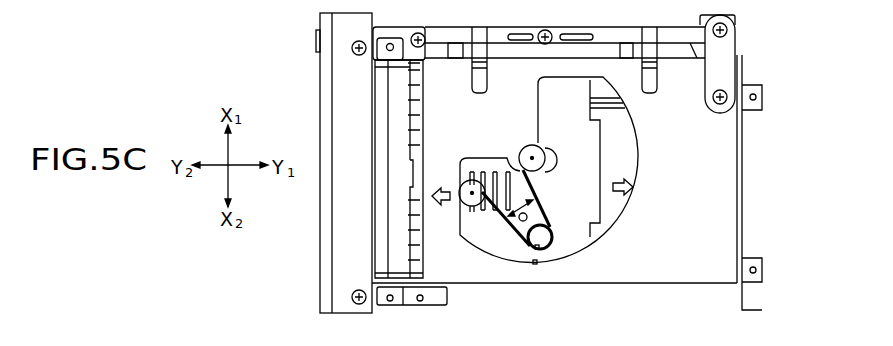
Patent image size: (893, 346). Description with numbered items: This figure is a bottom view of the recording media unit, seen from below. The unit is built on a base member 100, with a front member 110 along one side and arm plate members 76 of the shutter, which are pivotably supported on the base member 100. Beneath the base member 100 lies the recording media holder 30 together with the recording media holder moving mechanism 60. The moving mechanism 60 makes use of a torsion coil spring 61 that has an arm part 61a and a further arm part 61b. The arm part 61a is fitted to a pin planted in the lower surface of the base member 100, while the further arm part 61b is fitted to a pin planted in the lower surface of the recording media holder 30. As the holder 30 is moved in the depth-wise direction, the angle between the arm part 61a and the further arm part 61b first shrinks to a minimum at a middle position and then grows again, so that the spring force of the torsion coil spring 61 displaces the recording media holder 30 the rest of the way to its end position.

The front member 110 is at (327, 93).
The arm plate member 76 is at (400, 187).
The base member 100 is at (662, 275).
The recording media holder 30 is at (584, 155).
The recording media holder moving mechanism 60 is at (500, 237).
The torsion coil spring 61 is at (513, 240).
The arm part 61a is at (540, 198).
The further arm part 61b is at (503, 217).